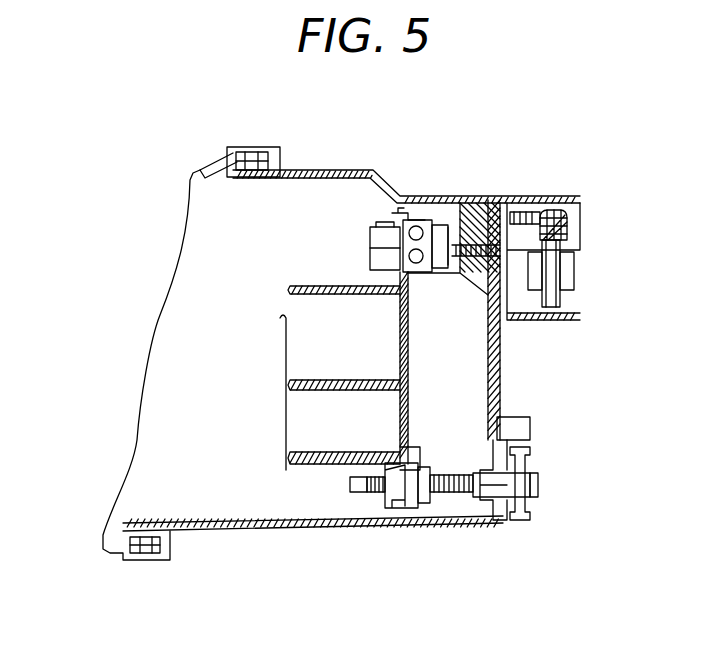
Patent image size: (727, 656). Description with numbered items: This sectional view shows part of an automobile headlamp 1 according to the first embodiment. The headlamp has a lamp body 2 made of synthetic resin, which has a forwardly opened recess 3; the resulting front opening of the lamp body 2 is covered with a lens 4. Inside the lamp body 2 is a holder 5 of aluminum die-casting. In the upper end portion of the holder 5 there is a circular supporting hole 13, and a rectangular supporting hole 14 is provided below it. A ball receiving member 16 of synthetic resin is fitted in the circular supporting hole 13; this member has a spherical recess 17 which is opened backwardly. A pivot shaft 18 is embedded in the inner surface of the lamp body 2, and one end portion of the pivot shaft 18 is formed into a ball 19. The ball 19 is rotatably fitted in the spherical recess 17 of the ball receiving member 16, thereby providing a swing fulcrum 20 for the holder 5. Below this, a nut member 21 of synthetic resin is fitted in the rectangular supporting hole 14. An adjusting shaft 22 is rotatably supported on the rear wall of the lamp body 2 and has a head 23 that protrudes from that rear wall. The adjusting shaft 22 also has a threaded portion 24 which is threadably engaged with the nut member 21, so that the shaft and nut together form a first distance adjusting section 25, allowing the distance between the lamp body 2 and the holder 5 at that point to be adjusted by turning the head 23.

The headlamp 1 is at (94, 177).
The lamp body 2 is at (333, 170).
The recess 3 is at (252, 522).
The lens 4 is at (203, 160).
The holder 5 is at (408, 358).
The circular supporting hole 13 is at (438, 205).
The rectangular supporting hole 14 is at (390, 463).
The ball receiving member 16 is at (400, 218).
The spherical recess 17 is at (478, 205).
The pivot shaft 18 is at (443, 255).
The ball 19 is at (403, 240).
The swing fulcrum 20 is at (428, 200).
The nut member 21 is at (385, 500).
The adjusting shaft 22 is at (446, 476).
The head 23 is at (538, 480).
The threaded portion 24 is at (432, 503).
The first distance adjusting section 25 is at (427, 512).